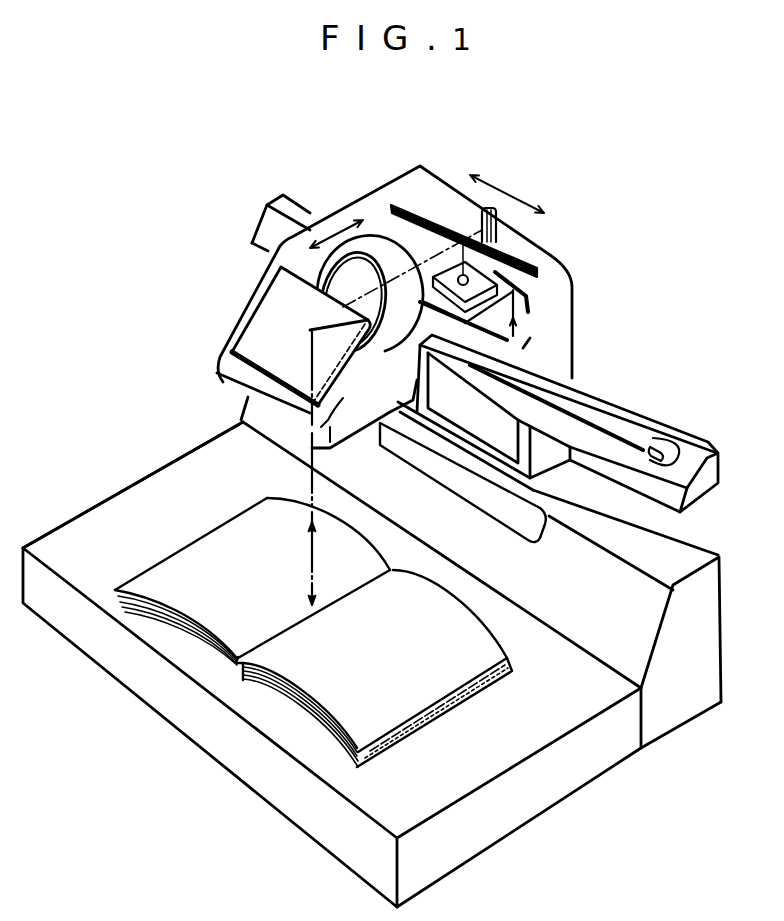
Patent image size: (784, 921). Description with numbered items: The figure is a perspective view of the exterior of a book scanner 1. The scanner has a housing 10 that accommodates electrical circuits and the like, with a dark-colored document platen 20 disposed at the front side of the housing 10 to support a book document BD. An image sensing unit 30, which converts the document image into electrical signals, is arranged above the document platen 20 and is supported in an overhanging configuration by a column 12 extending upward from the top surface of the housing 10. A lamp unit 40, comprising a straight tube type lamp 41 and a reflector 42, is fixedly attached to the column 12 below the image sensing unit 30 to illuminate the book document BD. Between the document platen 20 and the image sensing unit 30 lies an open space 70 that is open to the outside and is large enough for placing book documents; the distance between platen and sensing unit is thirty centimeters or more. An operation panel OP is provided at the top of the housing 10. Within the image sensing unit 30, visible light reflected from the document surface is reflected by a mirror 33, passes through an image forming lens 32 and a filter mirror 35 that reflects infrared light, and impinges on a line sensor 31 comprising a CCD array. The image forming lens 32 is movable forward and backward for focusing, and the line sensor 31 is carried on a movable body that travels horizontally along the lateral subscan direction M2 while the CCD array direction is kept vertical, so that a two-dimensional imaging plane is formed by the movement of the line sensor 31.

The book scanner 1 is at (114, 129).
The housing 10 is at (684, 665).
The column 12 is at (557, 317).
The document platen 20 is at (457, 767).
The image sensing unit 30 is at (333, 210).
The line sensor 31 is at (469, 228).
The image forming lens 32 is at (375, 247).
The mirror 33 is at (267, 313).
The filter mirror 35 is at (514, 260).
The lamp unit 40 is at (693, 448).
The straight tube type lamp 41 is at (648, 450).
The reflector 42 is at (592, 397).
The open space 70 is at (238, 458).
The book document BD is at (233, 603).
The operation panel OP is at (533, 520).
The subscan direction M2 is at (507, 189).